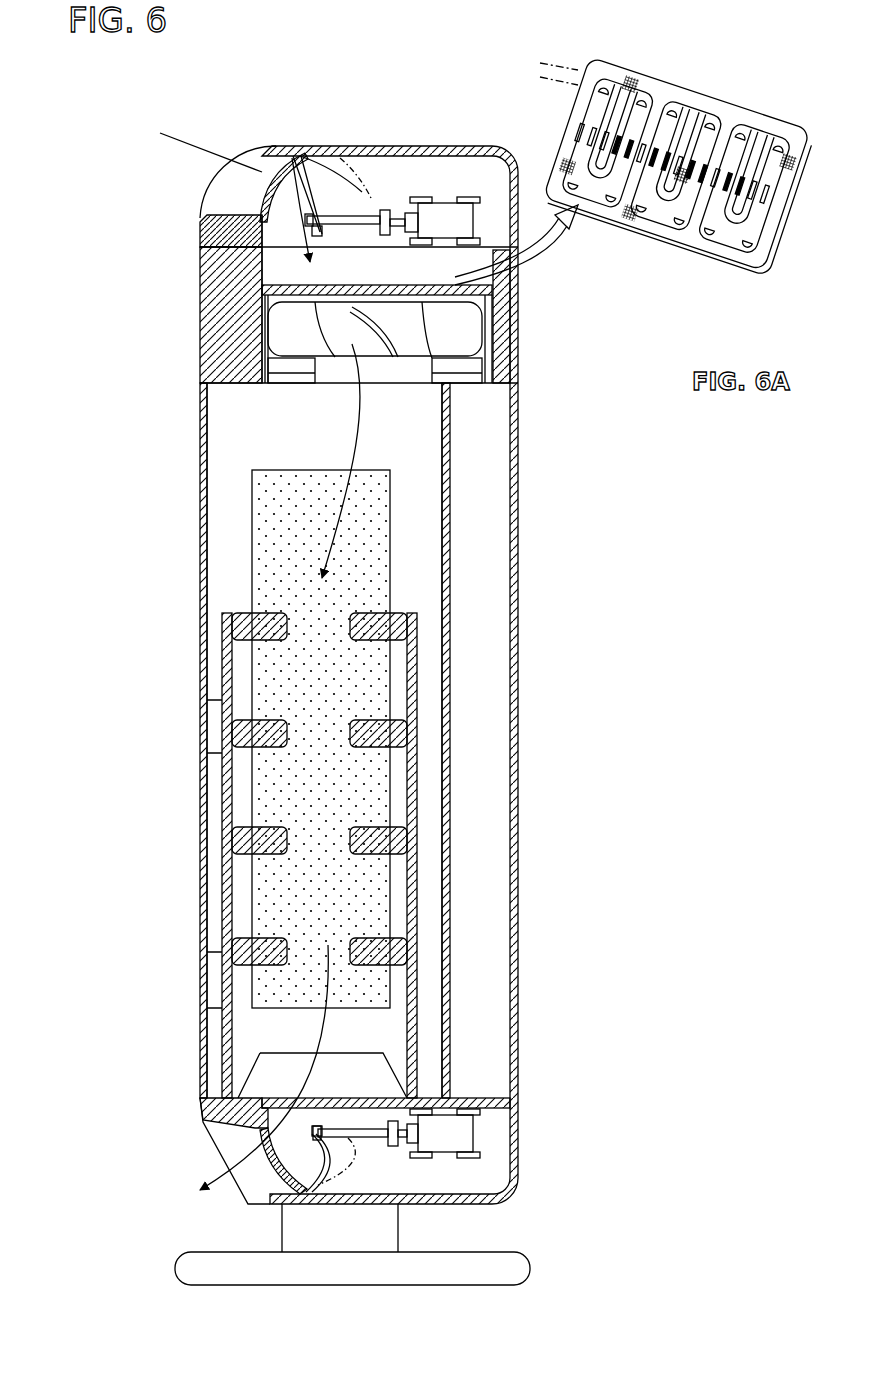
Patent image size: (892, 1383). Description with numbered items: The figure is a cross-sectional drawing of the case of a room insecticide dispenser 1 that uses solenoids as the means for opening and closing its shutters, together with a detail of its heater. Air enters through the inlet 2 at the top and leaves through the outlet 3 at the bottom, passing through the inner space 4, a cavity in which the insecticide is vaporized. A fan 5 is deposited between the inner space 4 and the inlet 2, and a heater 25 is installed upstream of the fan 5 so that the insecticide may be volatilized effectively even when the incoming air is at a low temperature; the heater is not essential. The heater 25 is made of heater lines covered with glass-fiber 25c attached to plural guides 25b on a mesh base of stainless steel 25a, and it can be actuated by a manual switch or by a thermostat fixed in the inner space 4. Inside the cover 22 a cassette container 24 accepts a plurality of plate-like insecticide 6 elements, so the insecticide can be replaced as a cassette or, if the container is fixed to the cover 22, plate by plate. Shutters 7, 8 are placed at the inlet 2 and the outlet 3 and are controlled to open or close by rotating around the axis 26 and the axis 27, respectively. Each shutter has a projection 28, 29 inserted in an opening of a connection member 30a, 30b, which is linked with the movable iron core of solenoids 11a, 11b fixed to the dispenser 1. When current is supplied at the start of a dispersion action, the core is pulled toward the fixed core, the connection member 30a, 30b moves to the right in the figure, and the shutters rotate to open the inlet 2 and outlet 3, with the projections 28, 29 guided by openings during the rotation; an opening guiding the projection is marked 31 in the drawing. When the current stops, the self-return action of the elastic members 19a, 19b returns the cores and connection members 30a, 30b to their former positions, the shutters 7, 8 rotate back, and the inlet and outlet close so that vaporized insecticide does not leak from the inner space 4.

In FIG. 6, the room insecticide dispenser 1 is at (524, 402).
In FIG. 6, the inlet 2 is at (232, 197).
In FIG. 6, the outlet 3 is at (222, 1128).
In FIG. 6, the inner space 4 is at (300, 434).
In FIG. 6, the fan 5 is at (420, 338).
In FIG. 6, the insecticide 6 is at (252, 503).
In FIG. 6, the shutter 7 is at (255, 165).
In FIG. 6, the shutter 8 is at (262, 1168).
In FIG. 6, the solenoid 11a is at (447, 195).
In FIG. 6, the solenoid 11b is at (490, 1136).
In FIG. 6, the elastic member 19a is at (403, 224).
In FIG. 6, the elastic member 19b is at (403, 1142).
In FIG. 6, the cover 22 is at (207, 680).
In FIG. 6, the cassette container 24 is at (207, 790).
In FIG. 6, the heater 25 is at (207, 276).
In FIG. 6A, the mesh base of stainless steel 25a is at (713, 257).
In FIG. 6A, the guides 25b is at (773, 205).
In FIG. 6A, the heater lines covered with glass-fiber 25c is at (700, 112).
In FIG. 6, the axis 26 is at (328, 231).
In FIG. 6, the axis 27 is at (314, 1128).
In FIG. 6, the projection 28 is at (320, 226).
In FIG. 6, the projection 29 is at (316, 1140).
In FIG. 6, the connection member 30a is at (375, 215).
In FIG. 6, the connection member 30b is at (347, 1140).
In FIG. 6, the link pin 31 is at (293, 158).